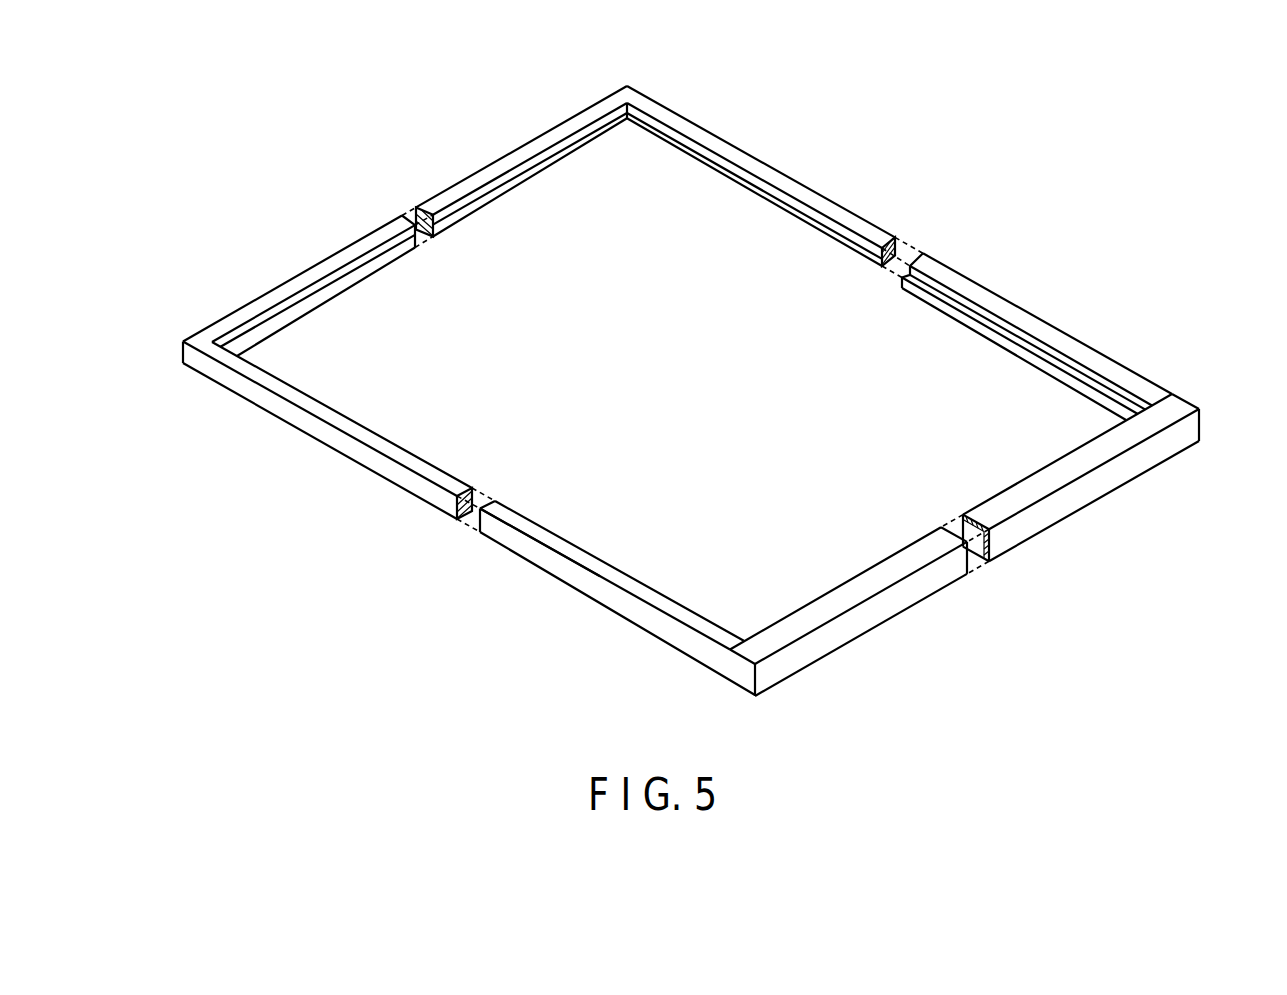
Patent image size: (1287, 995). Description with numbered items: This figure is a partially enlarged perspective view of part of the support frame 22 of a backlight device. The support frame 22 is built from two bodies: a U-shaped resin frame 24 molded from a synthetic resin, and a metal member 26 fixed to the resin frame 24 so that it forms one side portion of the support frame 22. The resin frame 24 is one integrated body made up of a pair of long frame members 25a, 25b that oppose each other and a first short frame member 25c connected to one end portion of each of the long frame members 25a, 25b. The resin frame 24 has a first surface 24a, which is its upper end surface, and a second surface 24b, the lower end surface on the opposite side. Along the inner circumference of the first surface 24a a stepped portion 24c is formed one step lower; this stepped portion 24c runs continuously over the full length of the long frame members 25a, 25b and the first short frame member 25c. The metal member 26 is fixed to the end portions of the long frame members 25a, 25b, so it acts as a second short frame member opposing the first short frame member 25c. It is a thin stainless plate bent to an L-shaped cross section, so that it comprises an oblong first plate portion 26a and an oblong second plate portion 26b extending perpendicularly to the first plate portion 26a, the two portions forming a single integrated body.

The support frame 22 is at (720, 390).
The resin frame 24 is at (677, 389).
The first surface 24a is at (530, 150).
The second surface 24b is at (365, 478).
The stepped portion 24c is at (722, 172).
The long frame member 25a is at (955, 263).
The long frame member 25b is at (545, 566).
The first short frame member 25c is at (330, 258).
The metal member 26 is at (993, 545).
The first plate portion 26a is at (1097, 455).
The second plate portion 26b is at (1095, 490).